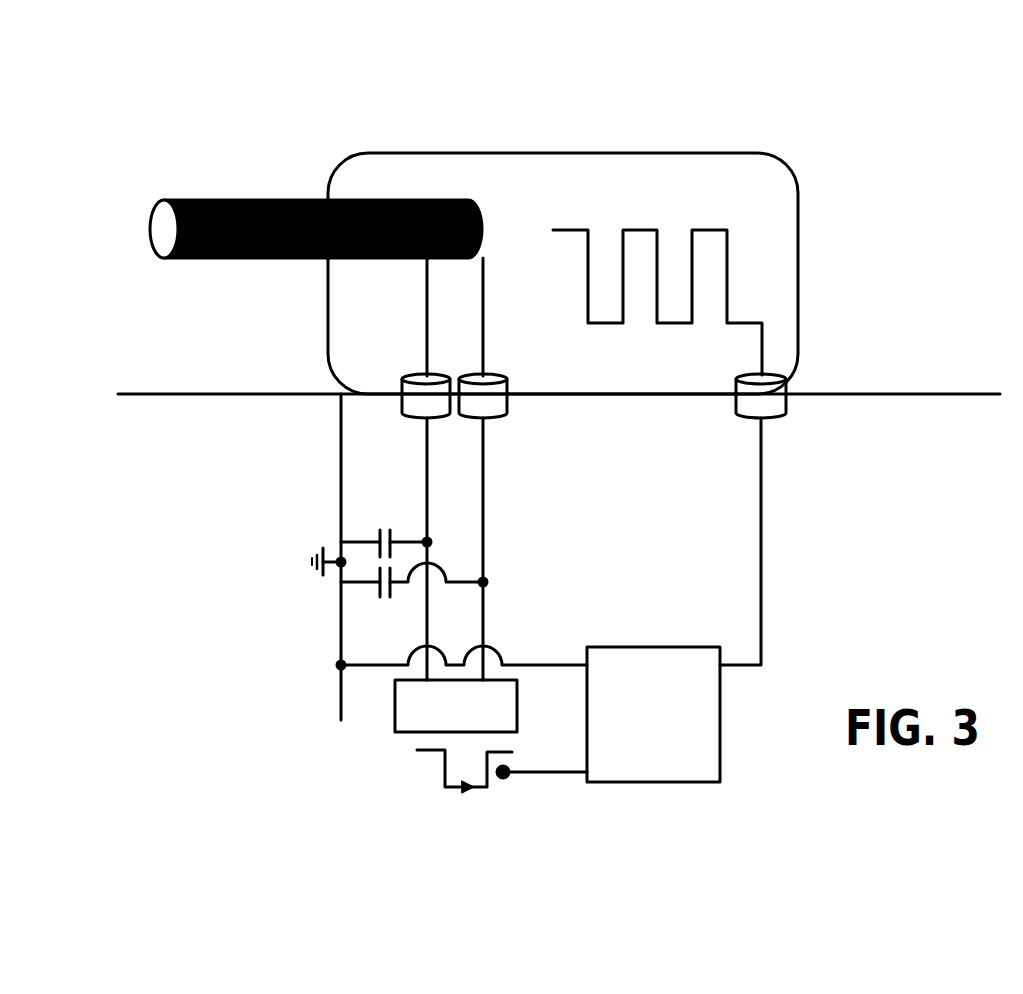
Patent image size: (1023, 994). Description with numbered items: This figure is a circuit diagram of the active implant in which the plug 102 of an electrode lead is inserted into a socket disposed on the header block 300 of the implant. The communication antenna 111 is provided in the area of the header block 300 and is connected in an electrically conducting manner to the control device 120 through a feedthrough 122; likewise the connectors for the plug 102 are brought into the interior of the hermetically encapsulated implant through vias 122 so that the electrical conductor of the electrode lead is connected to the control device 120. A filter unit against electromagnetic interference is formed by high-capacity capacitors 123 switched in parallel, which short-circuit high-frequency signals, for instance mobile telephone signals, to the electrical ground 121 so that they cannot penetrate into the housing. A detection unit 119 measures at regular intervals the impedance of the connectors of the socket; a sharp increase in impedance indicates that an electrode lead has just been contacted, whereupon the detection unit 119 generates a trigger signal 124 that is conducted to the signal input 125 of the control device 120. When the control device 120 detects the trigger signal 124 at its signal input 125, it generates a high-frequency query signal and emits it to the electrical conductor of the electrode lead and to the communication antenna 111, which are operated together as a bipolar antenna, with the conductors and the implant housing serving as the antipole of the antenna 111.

The plug 102 is at (258, 200).
The communication antenna 111 is at (705, 228).
The header block 300 is at (798, 248).
The feedthrough 122 is at (761, 418).
The high-capacity capacitors 123 is at (377, 523).
The electrical ground 121 is at (300, 562).
The detection unit 119 is at (456, 706).
The control device 120 is at (653, 714).
The trigger signal 124 is at (498, 782).
The signal input 125 is at (572, 772).